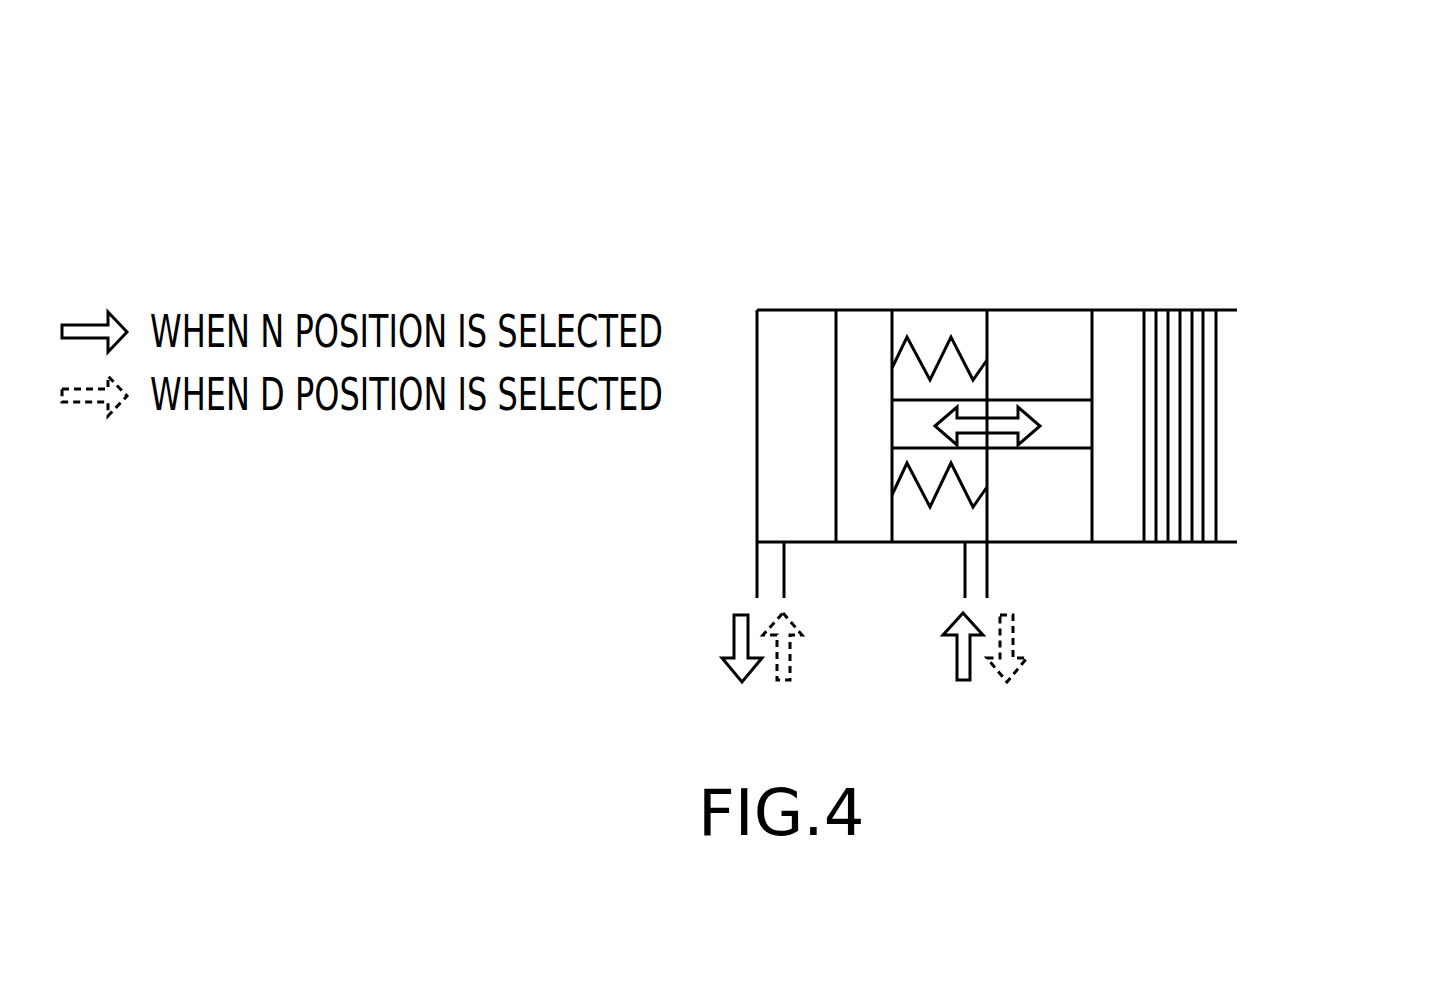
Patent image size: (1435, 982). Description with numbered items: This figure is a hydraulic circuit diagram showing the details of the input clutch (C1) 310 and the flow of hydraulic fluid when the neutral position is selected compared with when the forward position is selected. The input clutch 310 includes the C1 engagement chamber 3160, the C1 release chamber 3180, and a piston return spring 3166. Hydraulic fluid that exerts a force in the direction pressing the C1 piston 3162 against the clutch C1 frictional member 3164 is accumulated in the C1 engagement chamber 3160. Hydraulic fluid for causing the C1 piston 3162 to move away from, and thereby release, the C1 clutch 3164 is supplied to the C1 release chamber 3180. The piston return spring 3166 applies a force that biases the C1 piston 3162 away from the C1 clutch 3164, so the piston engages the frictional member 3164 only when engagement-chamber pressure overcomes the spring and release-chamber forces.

The input clutch (C1) 310 is at (1068, 180).
The C1 engagement chamber 3160 is at (788, 447).
The C1 piston 3162 is at (1120, 390).
The clutch C1 (frictional member) 3164 is at (1187, 447).
The piston return spring 3166 is at (933, 350).
The C1 release chamber 3180 is at (940, 500).